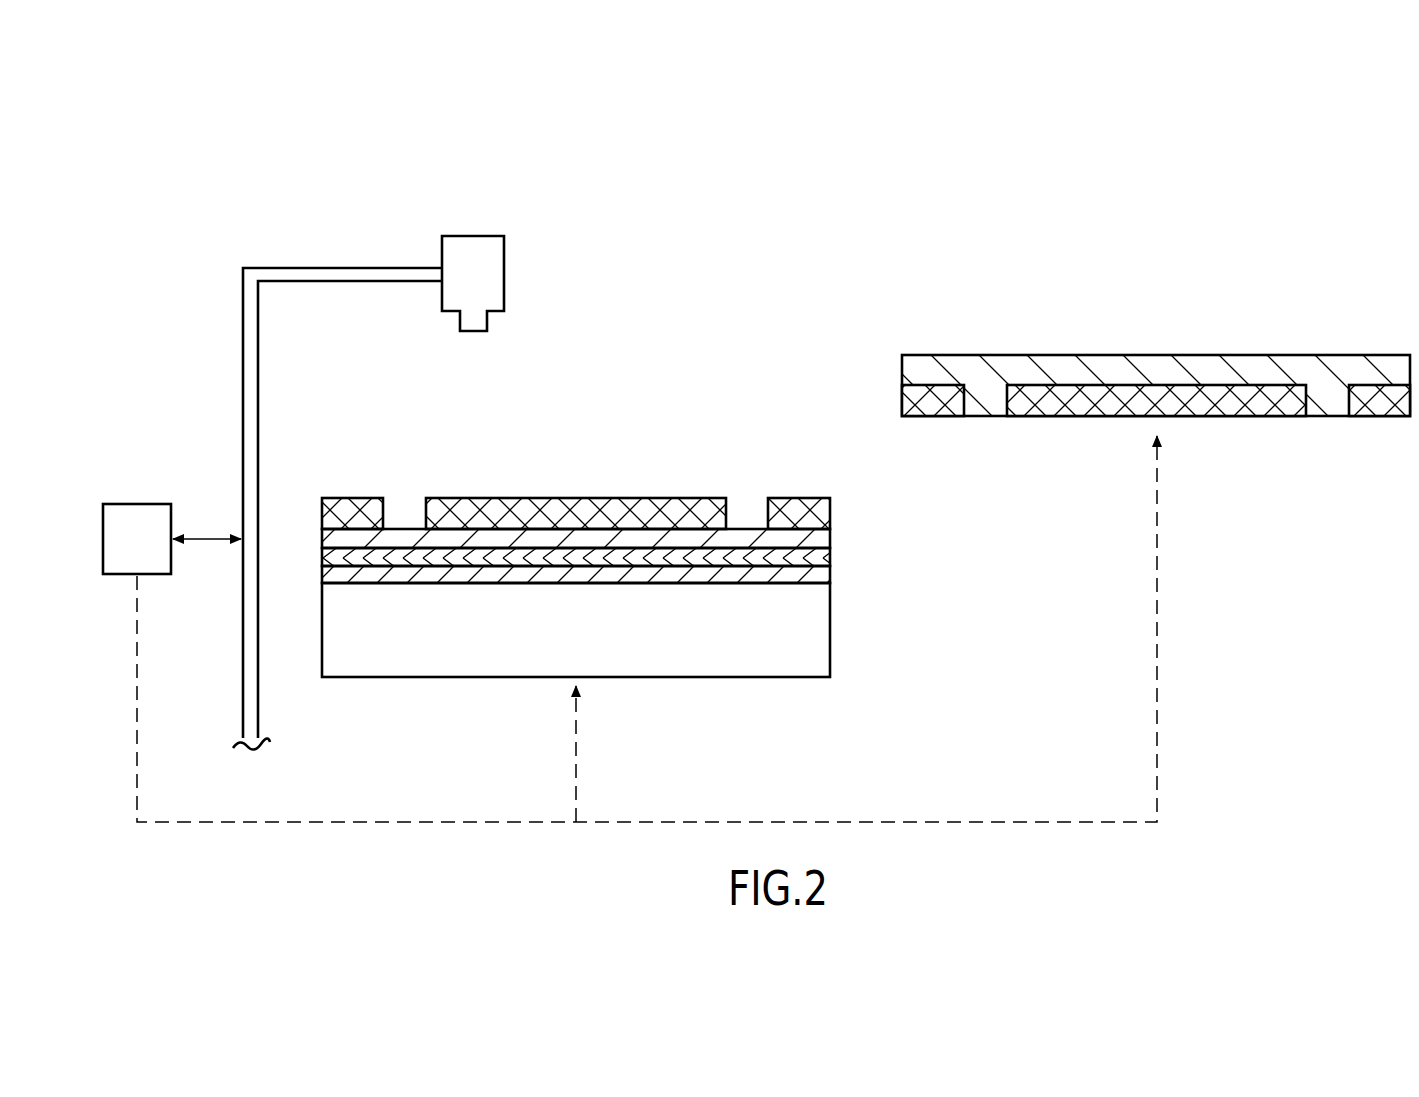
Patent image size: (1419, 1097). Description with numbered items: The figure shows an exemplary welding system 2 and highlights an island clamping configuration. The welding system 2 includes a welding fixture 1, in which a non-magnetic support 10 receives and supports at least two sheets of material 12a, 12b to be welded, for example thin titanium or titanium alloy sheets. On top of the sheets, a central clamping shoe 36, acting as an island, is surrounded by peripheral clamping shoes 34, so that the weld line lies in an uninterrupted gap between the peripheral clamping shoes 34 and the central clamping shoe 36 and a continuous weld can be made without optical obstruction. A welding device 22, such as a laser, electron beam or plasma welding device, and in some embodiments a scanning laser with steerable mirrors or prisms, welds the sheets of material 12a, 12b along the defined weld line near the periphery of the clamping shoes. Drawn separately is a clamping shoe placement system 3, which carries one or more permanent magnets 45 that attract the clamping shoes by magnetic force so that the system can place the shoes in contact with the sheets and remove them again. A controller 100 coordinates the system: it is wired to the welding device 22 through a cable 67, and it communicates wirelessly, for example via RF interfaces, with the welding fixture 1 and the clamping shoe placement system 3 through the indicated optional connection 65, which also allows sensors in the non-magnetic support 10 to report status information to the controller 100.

The welding fixture 1 is at (641, 570).
The welding system 2 is at (252, 183).
The clamping shoe placement system 3 is at (1156, 344).
The non-magnetic support 10 is at (826, 575).
The sheet of material 12a is at (824, 556).
The sheet of material 12b is at (832, 537).
The welding device 22 is at (459, 285).
The peripheral clamping shoes 34 is at (352, 514).
The central clamping shoe 36 is at (572, 514).
The permanent magnets 45 is at (941, 400).
The optional connection 65 is at (1160, 628).
The cable 67 is at (204, 535).
The controller 100 is at (116, 552).